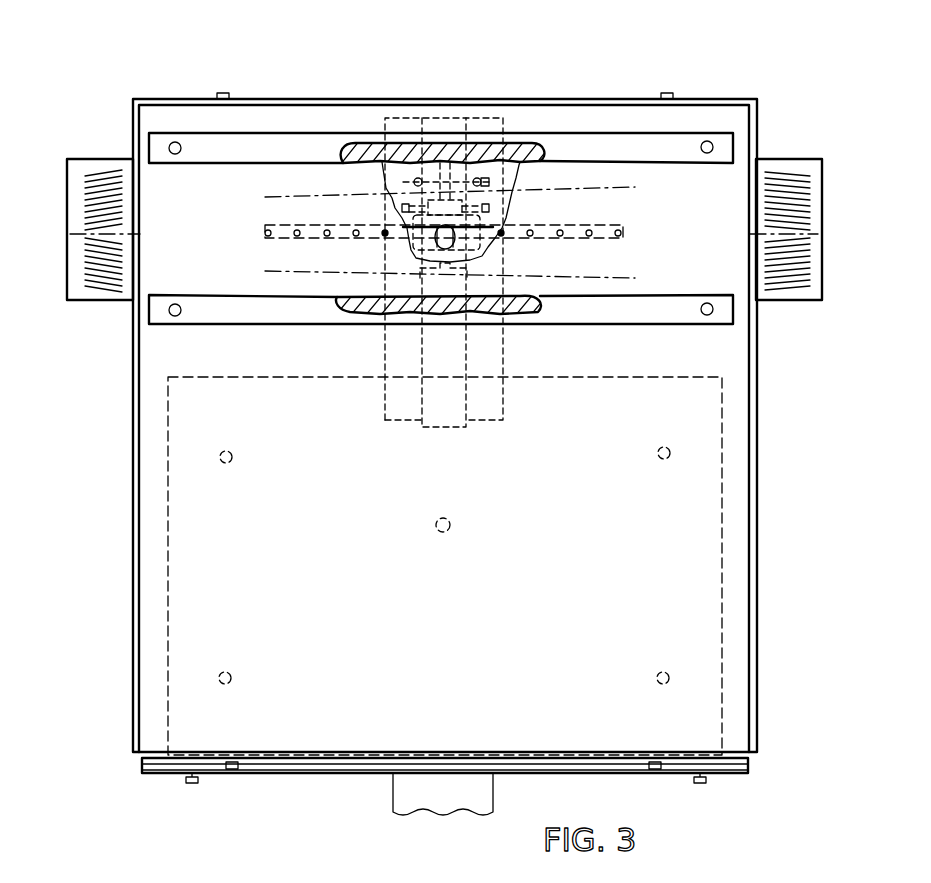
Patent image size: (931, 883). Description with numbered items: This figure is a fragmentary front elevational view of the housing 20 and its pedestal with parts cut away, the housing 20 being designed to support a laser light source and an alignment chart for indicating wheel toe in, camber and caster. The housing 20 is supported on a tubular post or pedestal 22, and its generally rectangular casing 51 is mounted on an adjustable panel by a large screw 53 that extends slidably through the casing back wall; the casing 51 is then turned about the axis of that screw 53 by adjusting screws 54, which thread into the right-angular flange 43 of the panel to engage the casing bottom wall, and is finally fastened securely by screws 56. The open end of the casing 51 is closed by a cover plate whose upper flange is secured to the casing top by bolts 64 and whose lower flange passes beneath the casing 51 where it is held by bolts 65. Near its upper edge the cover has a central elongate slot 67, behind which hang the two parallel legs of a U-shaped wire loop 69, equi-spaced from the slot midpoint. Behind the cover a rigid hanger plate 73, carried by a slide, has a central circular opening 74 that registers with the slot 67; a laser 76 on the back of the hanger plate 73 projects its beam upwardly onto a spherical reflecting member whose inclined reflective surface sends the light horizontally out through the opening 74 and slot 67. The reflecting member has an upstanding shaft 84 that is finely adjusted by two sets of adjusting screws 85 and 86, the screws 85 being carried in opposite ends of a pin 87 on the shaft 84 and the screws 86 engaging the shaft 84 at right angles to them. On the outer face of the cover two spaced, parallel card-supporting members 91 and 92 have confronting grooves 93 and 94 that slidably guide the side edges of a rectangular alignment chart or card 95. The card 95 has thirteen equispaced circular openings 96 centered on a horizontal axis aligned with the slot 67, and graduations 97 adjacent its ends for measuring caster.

The housing 20 is at (580, 80).
The tubular post or pedestal 22 is at (397, 795).
The right-angular flange 43 is at (511, 775).
The casing 51 is at (292, 99).
The screw 53 is at (451, 530).
The adjusting screws 54 is at (192, 784).
The screws 56 is at (234, 457).
The bolts 64 is at (221, 92).
The bolts 65 is at (235, 771).
The elongate slot 67 is at (486, 226).
The U-shaped wire loop 69 is at (480, 258).
The hanger plate 73 is at (503, 411).
The circular opening 74 is at (432, 232).
The laser 76 is at (440, 428).
The shaft 84 is at (445, 163).
The adjusting screws 85 is at (418, 177).
The adjusting screws 86 is at (402, 207).
The pin 87 is at (408, 182).
The card-supporting member 91 is at (597, 133).
The card-supporting member 92 is at (717, 325).
The groove 93 is at (332, 168).
The groove 94 is at (350, 296).
The alignment chart or card 95 is at (782, 158).
The circular openings 96 is at (297, 245).
The graduations 97 is at (68, 242).